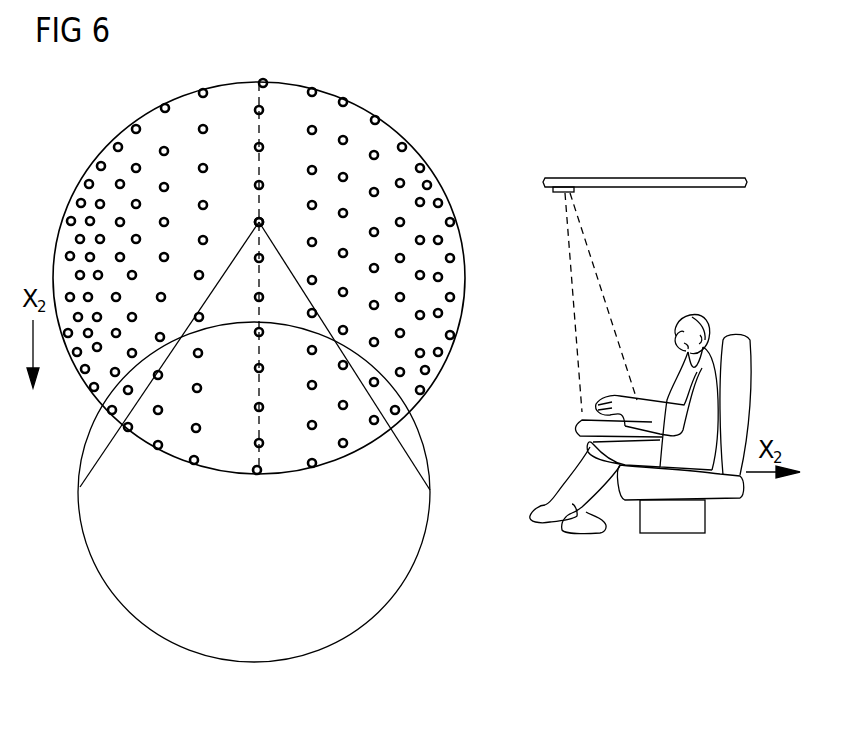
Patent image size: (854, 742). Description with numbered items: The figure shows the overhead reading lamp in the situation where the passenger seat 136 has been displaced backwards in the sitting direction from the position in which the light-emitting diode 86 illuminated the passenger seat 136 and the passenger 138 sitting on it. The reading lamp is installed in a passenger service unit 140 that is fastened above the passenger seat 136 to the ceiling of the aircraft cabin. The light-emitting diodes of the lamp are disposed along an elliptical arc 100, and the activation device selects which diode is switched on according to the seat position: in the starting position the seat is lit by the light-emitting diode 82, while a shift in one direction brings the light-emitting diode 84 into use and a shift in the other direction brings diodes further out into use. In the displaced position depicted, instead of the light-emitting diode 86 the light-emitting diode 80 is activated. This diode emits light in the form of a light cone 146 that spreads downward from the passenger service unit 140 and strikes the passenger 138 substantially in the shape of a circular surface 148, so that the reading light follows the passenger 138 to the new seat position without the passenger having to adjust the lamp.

The elliptical arc 100 is at (265, 94).
The light-emitting diode 80 is at (263, 222).
The light-emitting diode 82 is at (252, 262).
The light-emitting diode 84 is at (298, 283).
The light-emitting diode 86 is at (250, 338).
The circular surface 148 is at (377, 587).
The passenger service unit 140 is at (626, 178).
The light cone 146 is at (589, 312).
The passenger 138 is at (706, 314).
The passenger seat 136 is at (740, 360).